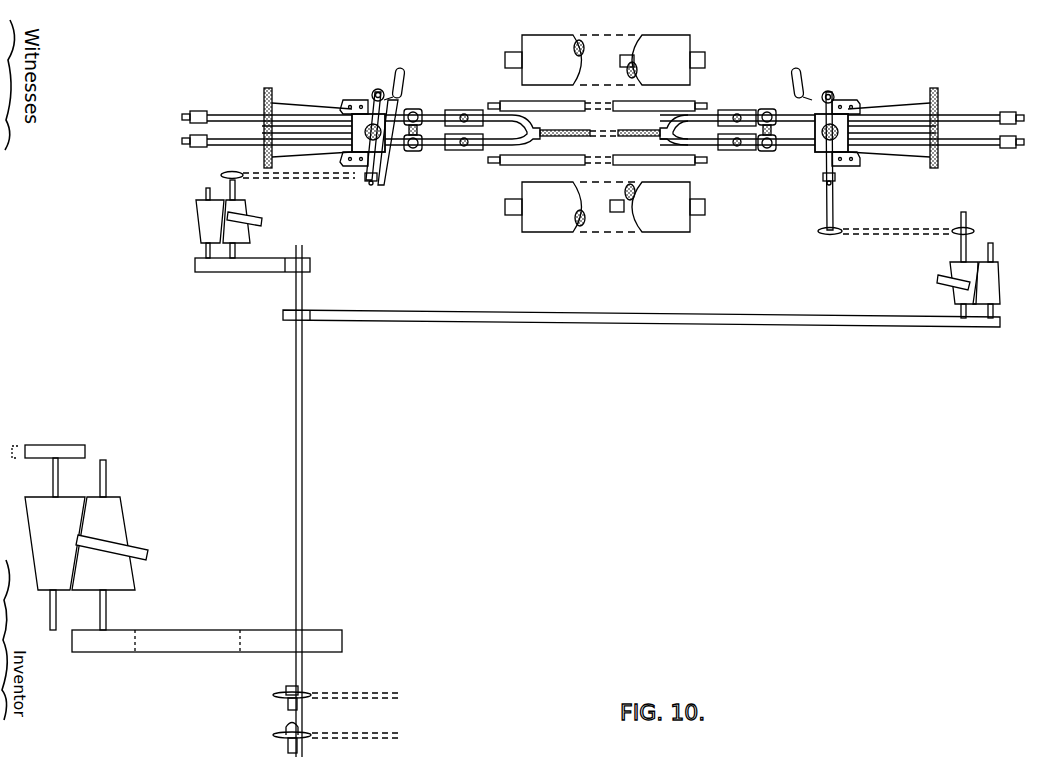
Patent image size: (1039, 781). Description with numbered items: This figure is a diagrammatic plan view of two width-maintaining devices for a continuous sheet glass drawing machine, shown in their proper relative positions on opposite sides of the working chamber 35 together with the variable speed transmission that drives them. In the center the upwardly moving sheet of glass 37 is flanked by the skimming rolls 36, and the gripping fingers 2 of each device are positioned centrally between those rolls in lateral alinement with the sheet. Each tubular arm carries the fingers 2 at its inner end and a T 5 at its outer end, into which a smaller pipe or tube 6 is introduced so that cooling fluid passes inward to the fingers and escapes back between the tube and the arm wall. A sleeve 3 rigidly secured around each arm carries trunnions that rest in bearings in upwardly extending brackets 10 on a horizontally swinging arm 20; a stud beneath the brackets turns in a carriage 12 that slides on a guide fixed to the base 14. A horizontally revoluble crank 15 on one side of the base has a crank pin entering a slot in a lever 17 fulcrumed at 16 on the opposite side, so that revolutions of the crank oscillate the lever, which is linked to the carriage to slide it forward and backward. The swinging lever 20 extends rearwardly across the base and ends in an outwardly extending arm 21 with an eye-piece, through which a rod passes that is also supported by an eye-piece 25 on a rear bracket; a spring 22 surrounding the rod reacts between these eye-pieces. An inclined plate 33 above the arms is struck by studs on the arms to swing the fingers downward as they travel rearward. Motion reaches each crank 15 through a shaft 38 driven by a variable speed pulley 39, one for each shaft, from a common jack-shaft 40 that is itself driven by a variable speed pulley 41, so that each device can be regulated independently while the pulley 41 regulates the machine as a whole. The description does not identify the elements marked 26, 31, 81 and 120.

The gripping fingers 2 is at (530, 132).
The sleeve 3 is at (420, 151).
The T 5 is at (194, 111).
The pipe or tube 6 is at (184, 114).
The brackets 10 is at (420, 112).
The carriage 12 is at (417, 131).
The base 14 is at (343, 104).
The crank 15 is at (379, 89).
The fulcrum 16 is at (378, 176).
The lever 17 is at (402, 80).
The swinging arm 20 is at (288, 106).
The arm 21 is at (270, 95).
The spring 22 is at (264, 105).
The eye-piece 25 is at (262, 130).
The carriage block / shaft 26 is at (296, 490).
The bearing box 31 is at (460, 114).
The plate 33 is at (374, 86).
The working chamber 35 is at (396, 117).
The skimming rolls 36 is at (640, 45).
The sheet of glass 37 is at (575, 130).
The shaft 38 is at (836, 105).
The variable speed pulley 39 is at (200, 228).
The jack-shaft 40 is at (295, 470).
The variable speed pulley 41 is at (112, 530).
The gear hub 81 is at (312, 693).
The gear hub 120 is at (330, 733).